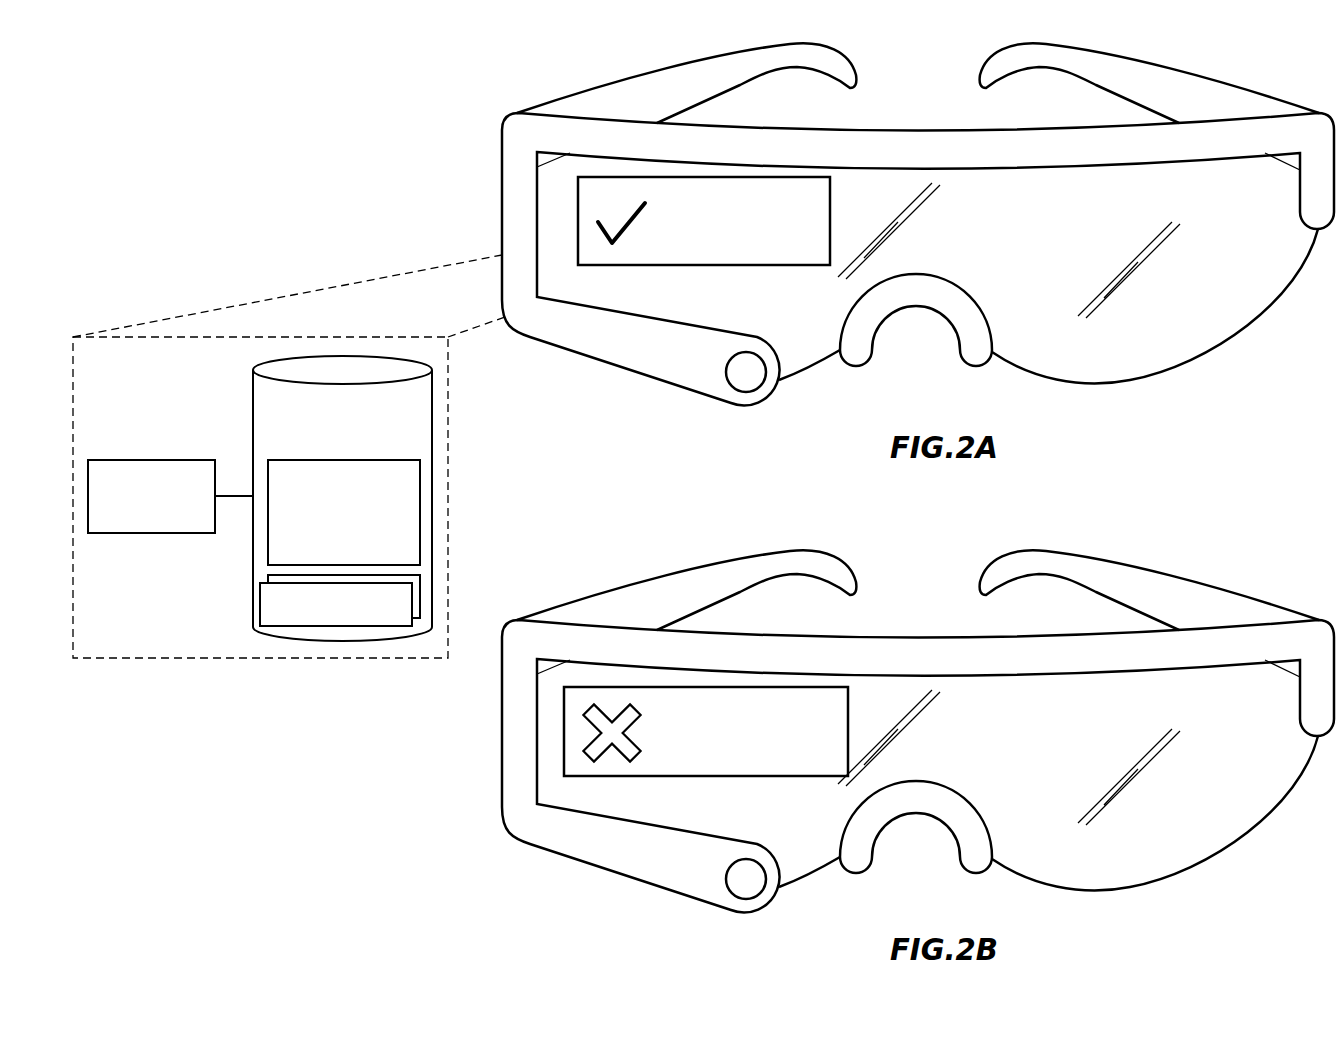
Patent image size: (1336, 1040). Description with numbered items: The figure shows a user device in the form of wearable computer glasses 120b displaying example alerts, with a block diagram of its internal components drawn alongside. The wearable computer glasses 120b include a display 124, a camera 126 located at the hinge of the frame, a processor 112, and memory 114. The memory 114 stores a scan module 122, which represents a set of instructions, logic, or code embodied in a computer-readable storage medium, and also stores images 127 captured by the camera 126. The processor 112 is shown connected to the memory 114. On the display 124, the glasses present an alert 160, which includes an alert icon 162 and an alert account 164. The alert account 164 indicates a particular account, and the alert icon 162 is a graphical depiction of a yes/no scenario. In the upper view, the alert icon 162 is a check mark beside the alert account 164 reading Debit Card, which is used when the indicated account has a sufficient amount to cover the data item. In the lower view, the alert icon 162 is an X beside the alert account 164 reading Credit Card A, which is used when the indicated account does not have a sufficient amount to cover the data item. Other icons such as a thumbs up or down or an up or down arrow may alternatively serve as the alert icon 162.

In FIG. 2A, the processor 112 is at (165, 520).
In FIG. 2A, the memory 114 is at (356, 445).
In FIG. 2A, the scan module 122 is at (361, 552).
In FIG. 2A, the images 127 is at (356, 616).
In FIG. 2A, the wearable computer glasses 120b is at (1318, 112).
In FIG. 2B, the wearable computer glasses 120b is at (918, 727).
In FIG. 2A, the display 124 is at (1234, 306).
In FIG. 2B, the display 124 is at (1048, 790).
In FIG. 2A, the camera 126 is at (743, 373).
In FIG. 2B, the camera 126 is at (714, 898).
In FIG. 2A, the alert 160 is at (757, 265).
In FIG. 2B, the alert 160 is at (706, 748).
In FIG. 2A, the alert icon 162 is at (610, 247).
In FIG. 2B, the alert icon 162 is at (611, 748).
In FIG. 2A, the alert account 164 is at (702, 247).
In FIG. 2B, the alert account 164 is at (729, 764).